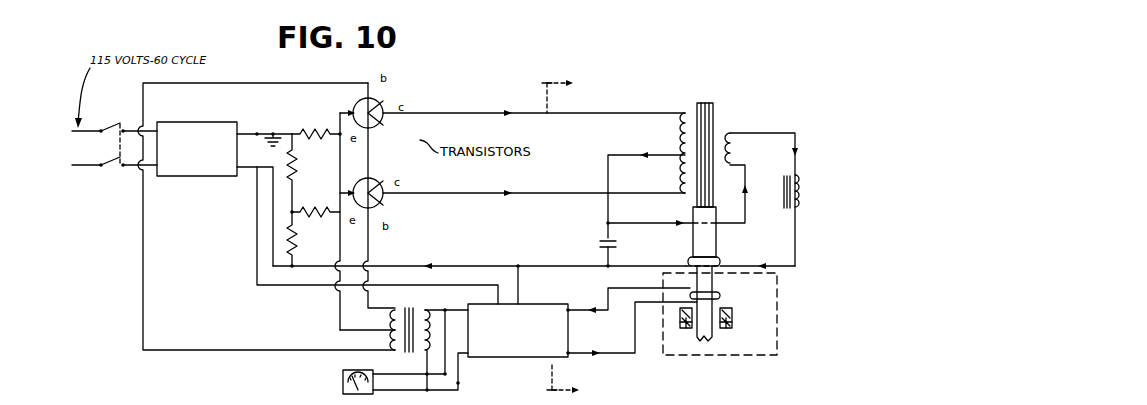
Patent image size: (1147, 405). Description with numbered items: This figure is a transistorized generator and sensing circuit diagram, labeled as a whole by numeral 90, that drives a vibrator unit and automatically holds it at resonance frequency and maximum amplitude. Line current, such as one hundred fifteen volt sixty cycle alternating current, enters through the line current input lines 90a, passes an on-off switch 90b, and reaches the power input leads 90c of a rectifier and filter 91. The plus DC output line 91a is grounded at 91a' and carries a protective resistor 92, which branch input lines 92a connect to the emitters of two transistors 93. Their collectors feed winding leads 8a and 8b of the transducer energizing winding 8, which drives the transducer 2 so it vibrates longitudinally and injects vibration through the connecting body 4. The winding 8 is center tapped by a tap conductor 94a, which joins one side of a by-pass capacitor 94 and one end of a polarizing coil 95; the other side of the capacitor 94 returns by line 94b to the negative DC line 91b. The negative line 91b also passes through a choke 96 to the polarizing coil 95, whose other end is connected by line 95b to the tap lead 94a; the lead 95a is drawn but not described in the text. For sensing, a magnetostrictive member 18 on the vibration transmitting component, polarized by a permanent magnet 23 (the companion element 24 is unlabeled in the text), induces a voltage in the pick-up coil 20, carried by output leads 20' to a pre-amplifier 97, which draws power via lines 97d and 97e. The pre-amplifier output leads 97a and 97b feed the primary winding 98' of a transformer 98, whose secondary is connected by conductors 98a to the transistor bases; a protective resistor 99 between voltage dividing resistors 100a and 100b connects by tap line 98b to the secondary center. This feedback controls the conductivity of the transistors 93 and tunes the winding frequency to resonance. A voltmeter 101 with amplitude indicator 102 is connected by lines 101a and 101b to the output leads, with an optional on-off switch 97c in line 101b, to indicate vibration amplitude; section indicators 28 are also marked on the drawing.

The transducer 2 is at (708, 103).
The connecting body 4 is at (693, 240).
The transducer energizing winding 8 is at (678, 131).
The winding lead 8a is at (572, 113).
The winding lead 8b is at (540, 193).
The magnetostrictive member 18 is at (708, 338).
The pick-up coil 20 is at (721, 289).
The output leads 20' is at (631, 333).
The permanent magnet 23 is at (733, 328).
The electrode 24 is at (734, 308).
The section line 28 is at (550, 237).
The circuit 90 is at (593, 62).
The line current input lines 90a is at (90, 131).
The on-off switch 90b is at (106, 167).
The power input leads 90c is at (150, 130).
The rectifier and filter 91 is at (200, 121).
The plus DC output line 91a is at (264, 124).
The grounding 91a' is at (250, 213).
The negative DC line 91b is at (272, 222).
The protective resistor 92 is at (313, 130).
The branch input lines 92a is at (340, 112).
The transistors 93 is at (385, 92).
The by-pass capacitor 94 is at (602, 241).
The tap conductor 94a is at (620, 155).
The line 94b is at (606, 260).
The polarizing coil 95 is at (733, 138).
The coil lead 95a is at (797, 135).
The line 95b is at (648, 224).
The choke 96 is at (806, 186).
The pre-amplifier 97 is at (545, 305).
The output lead 97a is at (452, 310).
The output lead 97b is at (460, 364).
The on-off switch 97c is at (458, 376).
The line 97d is at (257, 270).
The line 97e is at (519, 278).
The transformer 98 is at (402, 320).
The primary winding 98' is at (436, 351).
The conductors 98a is at (286, 84).
The tap line 98b is at (382, 320).
The protective resistor 99 is at (324, 208).
The voltage dividing resistor 100a is at (294, 155).
The voltage dividing resistor 100b is at (294, 237).
The voltmeter 101 is at (343, 374).
The line 101a is at (415, 374).
The line 101b is at (418, 391).
The amplitude indicator 102 is at (343, 388).